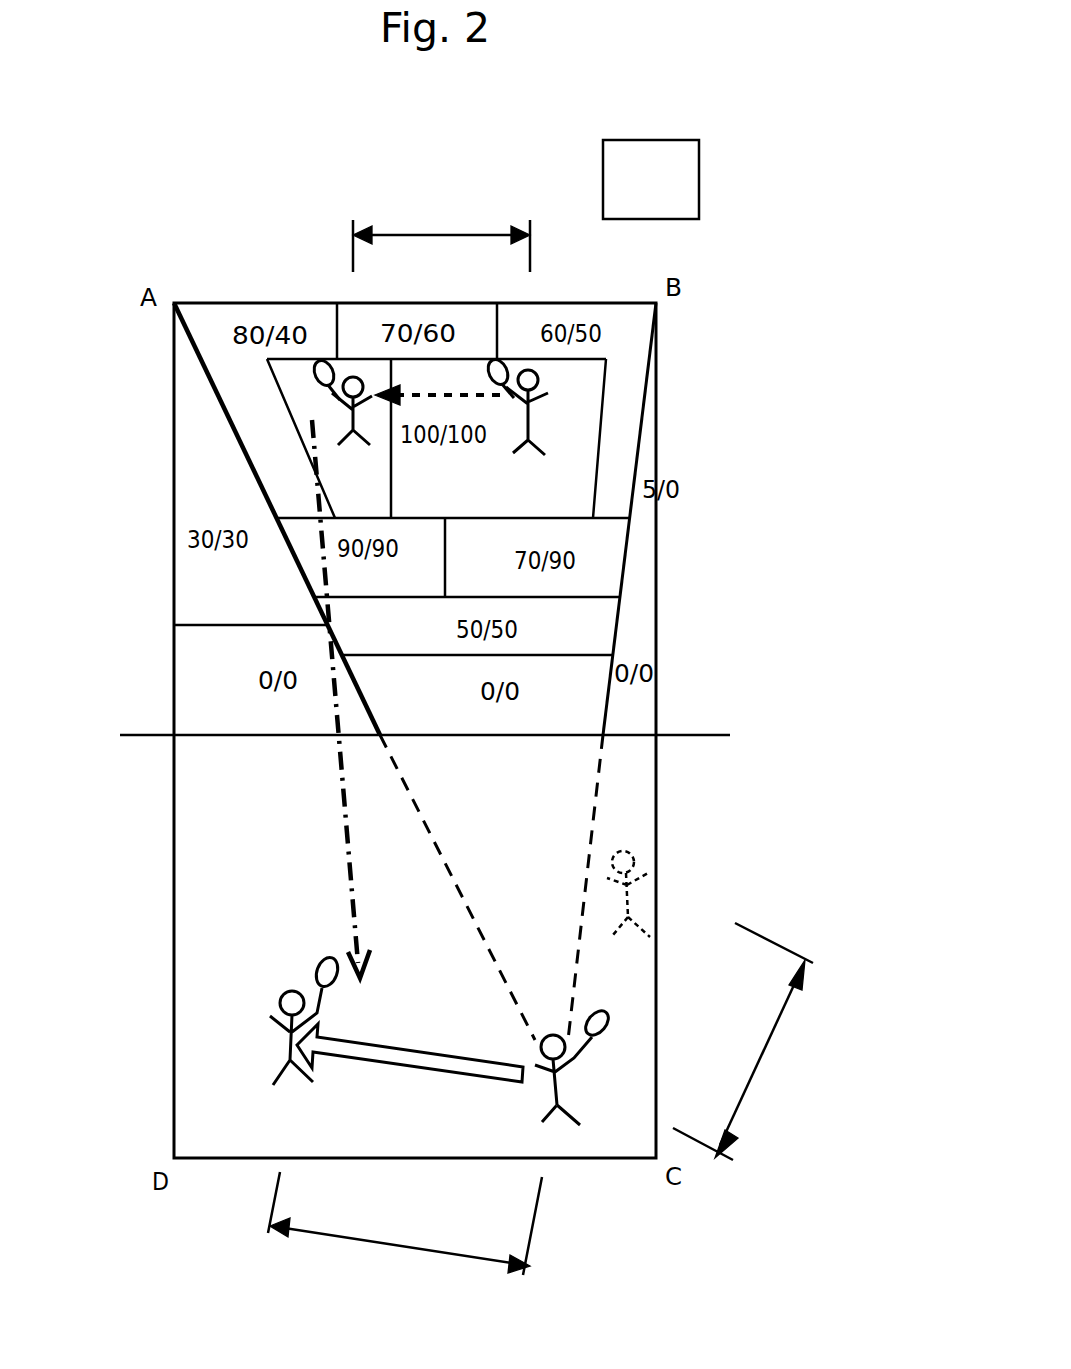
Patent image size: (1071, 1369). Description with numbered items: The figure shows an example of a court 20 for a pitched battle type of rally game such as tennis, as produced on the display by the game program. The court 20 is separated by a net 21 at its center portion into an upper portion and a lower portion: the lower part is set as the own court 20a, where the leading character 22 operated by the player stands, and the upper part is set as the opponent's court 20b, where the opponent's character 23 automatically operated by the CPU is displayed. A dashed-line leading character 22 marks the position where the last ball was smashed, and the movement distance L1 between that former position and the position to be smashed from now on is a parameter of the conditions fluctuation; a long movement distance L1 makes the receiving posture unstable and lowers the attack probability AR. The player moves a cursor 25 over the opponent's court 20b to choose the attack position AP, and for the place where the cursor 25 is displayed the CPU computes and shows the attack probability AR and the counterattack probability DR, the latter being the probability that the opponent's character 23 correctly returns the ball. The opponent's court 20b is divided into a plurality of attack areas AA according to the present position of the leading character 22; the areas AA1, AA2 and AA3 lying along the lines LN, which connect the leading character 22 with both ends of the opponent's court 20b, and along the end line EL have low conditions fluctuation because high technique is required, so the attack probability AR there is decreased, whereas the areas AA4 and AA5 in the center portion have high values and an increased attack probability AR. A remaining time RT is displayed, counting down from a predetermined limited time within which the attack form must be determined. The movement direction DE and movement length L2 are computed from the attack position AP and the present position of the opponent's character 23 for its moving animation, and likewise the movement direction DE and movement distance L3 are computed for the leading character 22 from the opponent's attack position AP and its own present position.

The court 20 is at (142, 941).
The own court 20a is at (574, 1142).
The opponent's court 20b is at (442, 637).
The net 21 is at (675, 733).
The leading character 22 is at (283, 993).
The opponent's character 23 is at (350, 372).
The cursor 25 is at (305, 407).
The remaining time RT is at (643, 153).
The end line EL is at (300, 305).
The lines LN is at (197, 360).
The movement direction DE is at (410, 731).
The attack position AP is at (323, 425).
The movement distance L1 is at (743, 1041).
The movement length L2 is at (441, 235).
The movement distance L3 is at (405, 1223).
The attack area AA is at (190, 605).
The attack area AA1 is at (250, 322).
The attack area AA2 is at (397, 308).
The attack area AA3 is at (633, 355).
The attack area AA4 is at (573, 453).
The attack area AA5 is at (368, 498).
The attack probability AR is at (197, 515).
The counterattack probability DR is at (618, 308).